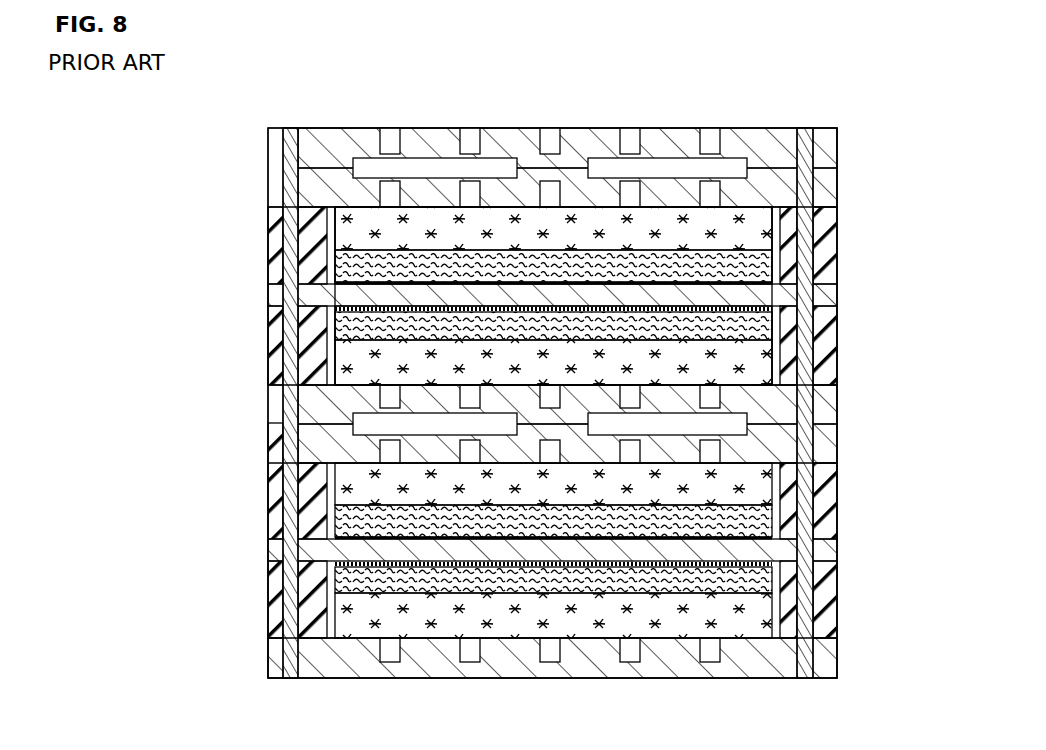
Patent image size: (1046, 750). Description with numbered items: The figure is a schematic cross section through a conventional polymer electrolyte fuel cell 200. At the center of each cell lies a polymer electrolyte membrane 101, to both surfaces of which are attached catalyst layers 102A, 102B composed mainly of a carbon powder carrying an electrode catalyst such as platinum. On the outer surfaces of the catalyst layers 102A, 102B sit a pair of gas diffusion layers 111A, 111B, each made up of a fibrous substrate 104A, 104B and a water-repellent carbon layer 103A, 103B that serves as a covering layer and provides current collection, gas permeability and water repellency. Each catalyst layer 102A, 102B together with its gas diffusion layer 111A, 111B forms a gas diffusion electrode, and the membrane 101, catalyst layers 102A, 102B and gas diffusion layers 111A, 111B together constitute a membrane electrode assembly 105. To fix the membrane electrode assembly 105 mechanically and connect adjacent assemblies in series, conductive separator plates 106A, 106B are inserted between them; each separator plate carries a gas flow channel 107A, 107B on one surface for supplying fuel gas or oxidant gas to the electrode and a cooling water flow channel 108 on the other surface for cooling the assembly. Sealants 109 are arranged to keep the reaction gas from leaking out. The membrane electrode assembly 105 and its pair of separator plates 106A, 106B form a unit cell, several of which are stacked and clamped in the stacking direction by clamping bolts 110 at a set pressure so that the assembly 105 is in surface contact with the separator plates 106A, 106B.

The polymer electrolyte fuel cell 200 is at (779, 100).
The polymer electrolyte membrane 101 is at (270, 302).
The catalyst layer 102A is at (282, 284).
The catalyst layer 102B is at (282, 320).
The water-repellent carbon layer 103A is at (282, 253).
The water-repellent carbon layer 103B is at (282, 355).
The fibrous substrate 104A is at (282, 224).
The fibrous substrate 104B is at (282, 385).
The membrane electrode assembly 105 is at (137, 193).
The conductive separator plate 106A is at (267, 197).
The conductive separator plate 106B is at (267, 141).
The gas flow channel 107A is at (723, 189).
The gas flow channel 107B is at (712, 398).
The cooling water flow channel 108 is at (355, 168).
The sealant 109 is at (812, 263).
The clamping bolt 110 is at (830, 383).
The gas diffusion layer 111A is at (198, 205).
The gas diffusion layer 111B is at (198, 350).